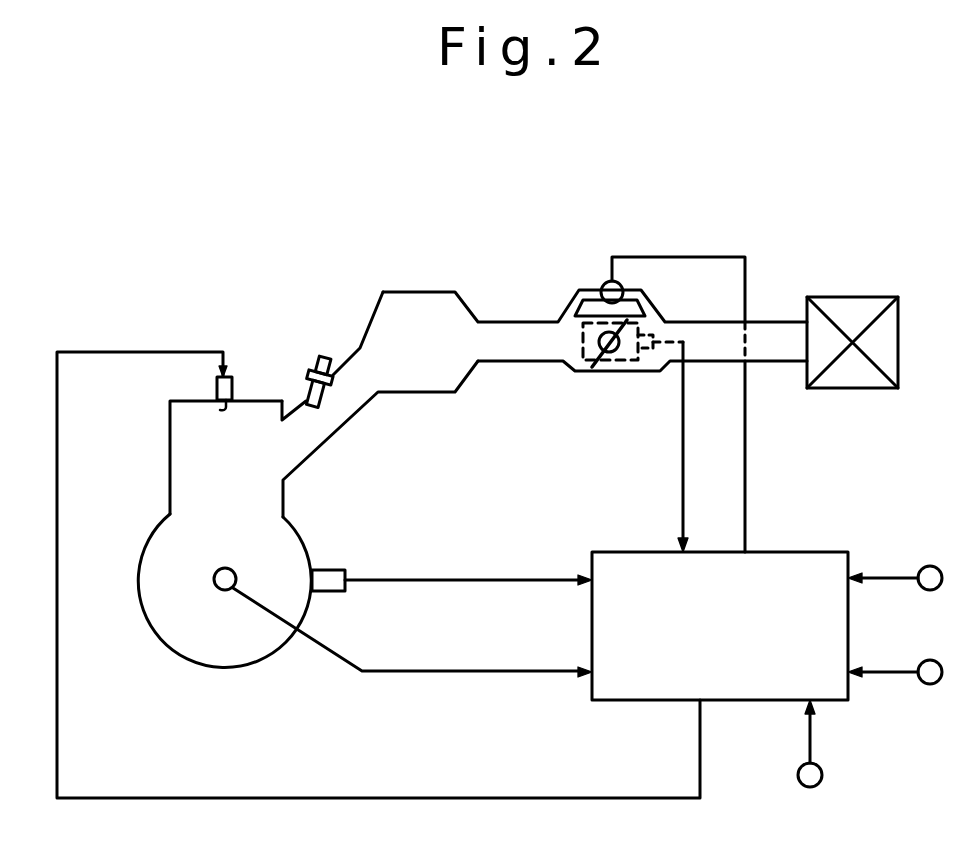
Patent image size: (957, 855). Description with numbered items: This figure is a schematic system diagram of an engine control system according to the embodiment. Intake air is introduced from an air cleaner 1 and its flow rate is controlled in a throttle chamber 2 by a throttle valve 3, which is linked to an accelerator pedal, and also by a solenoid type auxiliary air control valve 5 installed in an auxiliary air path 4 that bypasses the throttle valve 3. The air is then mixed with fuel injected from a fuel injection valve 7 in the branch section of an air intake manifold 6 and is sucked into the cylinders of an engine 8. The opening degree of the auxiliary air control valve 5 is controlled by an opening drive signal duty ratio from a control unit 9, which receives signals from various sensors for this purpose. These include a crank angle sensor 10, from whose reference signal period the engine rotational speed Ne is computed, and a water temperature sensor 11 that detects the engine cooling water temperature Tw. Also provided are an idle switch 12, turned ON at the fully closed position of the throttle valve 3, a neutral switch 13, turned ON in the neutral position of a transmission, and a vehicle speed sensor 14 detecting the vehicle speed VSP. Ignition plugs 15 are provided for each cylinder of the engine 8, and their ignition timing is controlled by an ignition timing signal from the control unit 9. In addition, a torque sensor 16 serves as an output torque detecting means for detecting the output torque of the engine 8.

The air cleaner 1 is at (815, 297).
The throttle chamber 2 is at (577, 373).
The throttle valve 3 is at (611, 357).
The auxiliary air path 4 is at (567, 310).
The auxiliary air control valve 5 is at (605, 287).
The air intake manifold 6 is at (373, 320).
The fuel injection valve 7 is at (303, 377).
The engine 8 is at (170, 457).
The control unit 9 is at (648, 702).
The crank angle sensor 10 is at (232, 590).
The water temperature sensor 11 is at (337, 568).
The idle switch 12 is at (628, 362).
The neutral switch 13 is at (918, 568).
The vehicle speed sensor 14 is at (917, 682).
The ignition plugs 15 is at (216, 385).
The torque sensor 16 is at (800, 772).